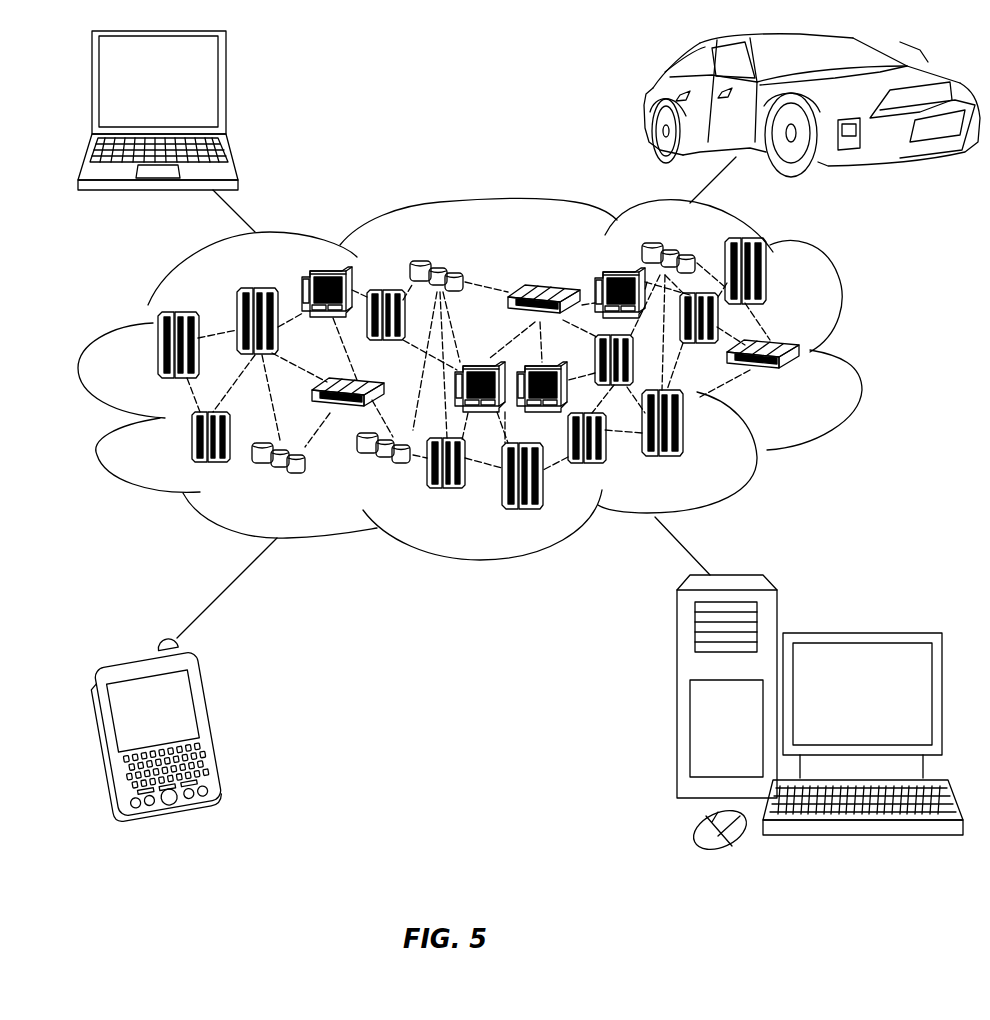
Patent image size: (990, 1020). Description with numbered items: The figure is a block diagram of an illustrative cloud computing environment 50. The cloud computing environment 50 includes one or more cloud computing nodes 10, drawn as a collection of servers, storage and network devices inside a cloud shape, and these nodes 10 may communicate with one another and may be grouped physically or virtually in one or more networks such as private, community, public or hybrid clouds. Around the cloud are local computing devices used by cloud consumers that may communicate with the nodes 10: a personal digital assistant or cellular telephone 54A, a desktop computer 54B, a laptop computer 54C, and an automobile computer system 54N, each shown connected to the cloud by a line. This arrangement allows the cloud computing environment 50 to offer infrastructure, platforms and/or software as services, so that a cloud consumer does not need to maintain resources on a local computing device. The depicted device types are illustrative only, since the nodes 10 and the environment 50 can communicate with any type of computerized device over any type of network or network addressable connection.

The cloud computing environment 50 is at (860, 355).
The cloud computing nodes 10 is at (812, 384).
The personal digital assistant or cellular telephone 54A is at (215, 723).
The desktop computer 54B is at (860, 632).
The laptop computer 54C is at (225, 90).
The automobile computer system 54N is at (647, 105).